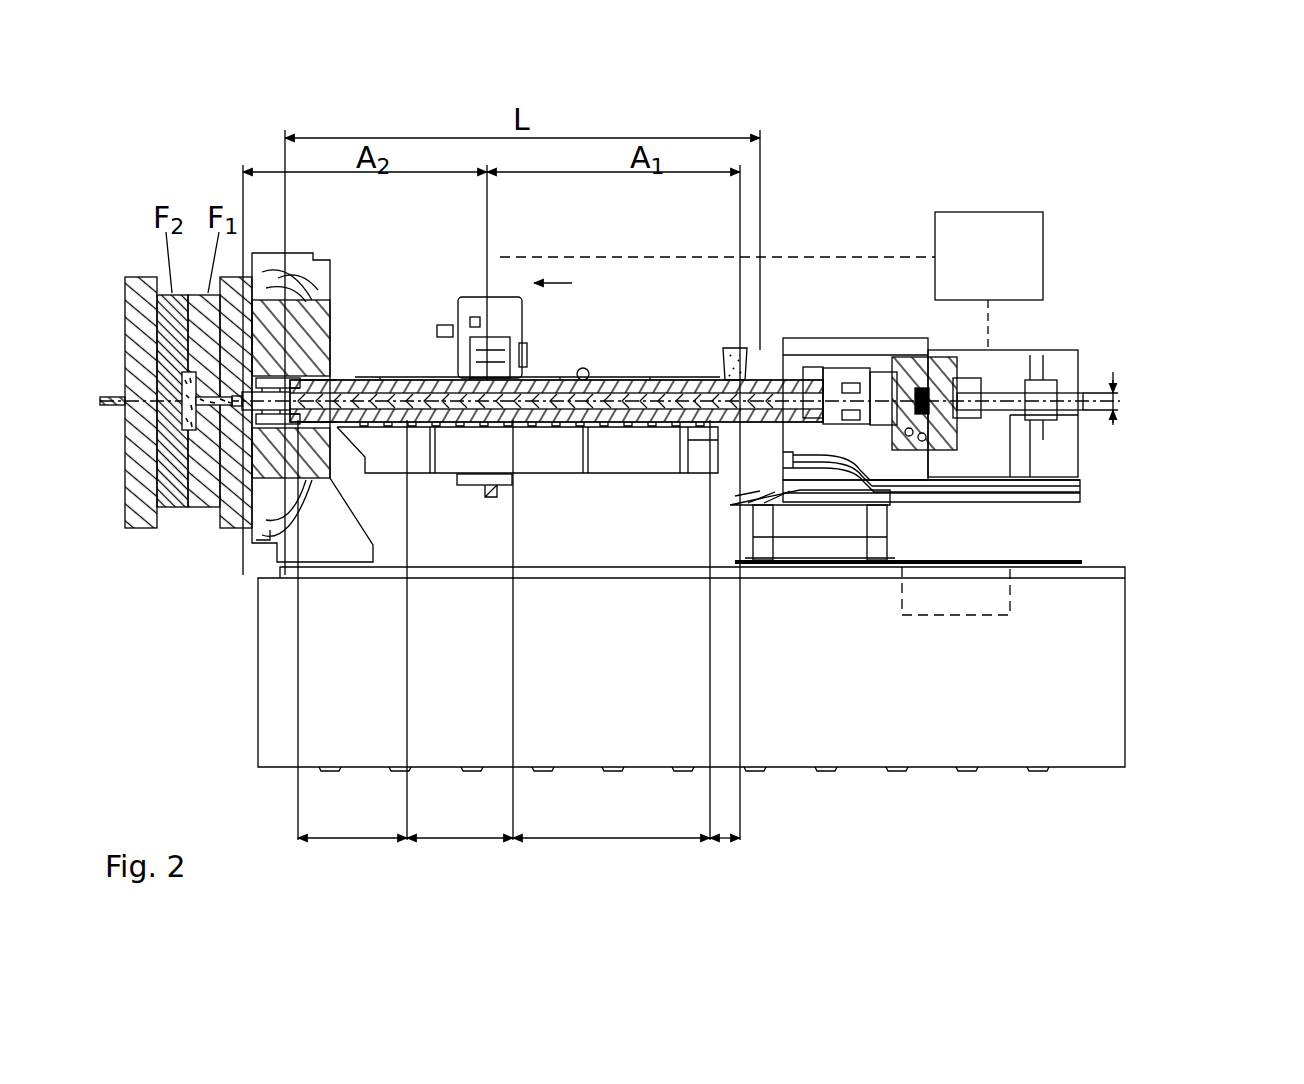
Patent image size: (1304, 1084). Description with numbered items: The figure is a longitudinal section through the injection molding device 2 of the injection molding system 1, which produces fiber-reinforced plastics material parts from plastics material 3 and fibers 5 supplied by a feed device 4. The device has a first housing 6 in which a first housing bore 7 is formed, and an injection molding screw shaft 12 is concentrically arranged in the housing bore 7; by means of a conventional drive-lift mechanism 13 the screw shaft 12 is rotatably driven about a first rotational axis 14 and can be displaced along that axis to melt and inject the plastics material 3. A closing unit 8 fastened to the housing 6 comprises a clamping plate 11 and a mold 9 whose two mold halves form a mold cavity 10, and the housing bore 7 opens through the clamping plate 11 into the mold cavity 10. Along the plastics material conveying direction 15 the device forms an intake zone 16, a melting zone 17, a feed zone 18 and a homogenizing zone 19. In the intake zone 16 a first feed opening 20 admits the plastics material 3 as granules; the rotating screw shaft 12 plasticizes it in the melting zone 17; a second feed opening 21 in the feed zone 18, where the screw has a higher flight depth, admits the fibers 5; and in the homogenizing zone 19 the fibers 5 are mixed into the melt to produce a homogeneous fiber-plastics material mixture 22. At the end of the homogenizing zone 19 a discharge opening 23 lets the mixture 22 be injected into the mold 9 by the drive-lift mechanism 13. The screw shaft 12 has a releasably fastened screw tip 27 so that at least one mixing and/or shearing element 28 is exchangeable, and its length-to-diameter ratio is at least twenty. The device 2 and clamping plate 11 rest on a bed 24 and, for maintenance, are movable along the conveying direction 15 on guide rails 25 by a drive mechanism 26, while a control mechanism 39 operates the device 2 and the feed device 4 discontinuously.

The injection molding system 1 is at (872, 178).
The injection molding device 2 is at (642, 346).
The plastics material 3 is at (732, 346).
The feed device 4 is at (468, 290).
The fibers 5 is at (182, 427).
The first housing 6 is at (623, 378).
The first housing bore 7 is at (410, 376).
The closing unit 8 is at (300, 250).
The mold 9 is at (184, 286).
The mold cavity 10 is at (192, 432).
The clamping plate 11 is at (303, 384).
The injection molding screw shaft 12 is at (590, 372).
The drive-lift mechanism 13 is at (839, 330).
The first rotational axis 14 is at (1087, 405).
The plastics material conveying direction 15 is at (552, 283).
The intake zone 16 is at (730, 820).
The melting zone 17 is at (611, 820).
The feed zone 18 is at (460, 820).
The homogenizing zone 19 is at (352, 820).
The first feed opening 20 is at (745, 346).
The second feed opening 21 is at (523, 343).
The fiber-plastics material mixture 22 is at (177, 393).
The discharge opening 23 is at (235, 402).
The bed 24 is at (1118, 667).
The guide rails 25 is at (1083, 562).
The drive mechanism 26 is at (1003, 588).
The screw tip 27 is at (322, 424).
The mixing and/or shearing element 28 is at (356, 380).
The control mechanism 39 is at (975, 218).